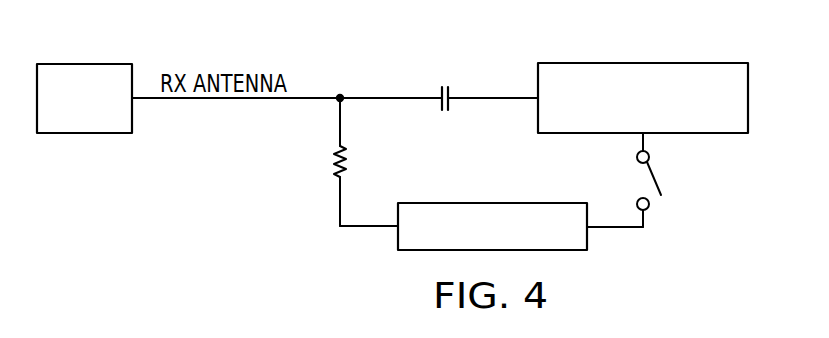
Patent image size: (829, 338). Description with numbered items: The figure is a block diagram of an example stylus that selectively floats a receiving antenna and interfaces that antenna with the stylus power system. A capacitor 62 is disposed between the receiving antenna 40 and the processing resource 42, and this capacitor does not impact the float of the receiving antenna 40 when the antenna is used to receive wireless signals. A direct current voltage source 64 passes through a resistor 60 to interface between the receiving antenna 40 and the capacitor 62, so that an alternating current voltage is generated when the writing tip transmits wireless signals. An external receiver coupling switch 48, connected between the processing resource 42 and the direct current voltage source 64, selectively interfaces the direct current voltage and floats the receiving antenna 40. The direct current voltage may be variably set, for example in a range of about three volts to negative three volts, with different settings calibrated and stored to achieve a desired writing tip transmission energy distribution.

The receiving antenna 40 is at (99, 114).
The processing resource 42 is at (655, 62).
The external receiver coupling switch 48 is at (659, 180).
The resistor 60 is at (335, 158).
The capacitor 62 is at (446, 86).
The direct current voltage source 64 is at (491, 202).